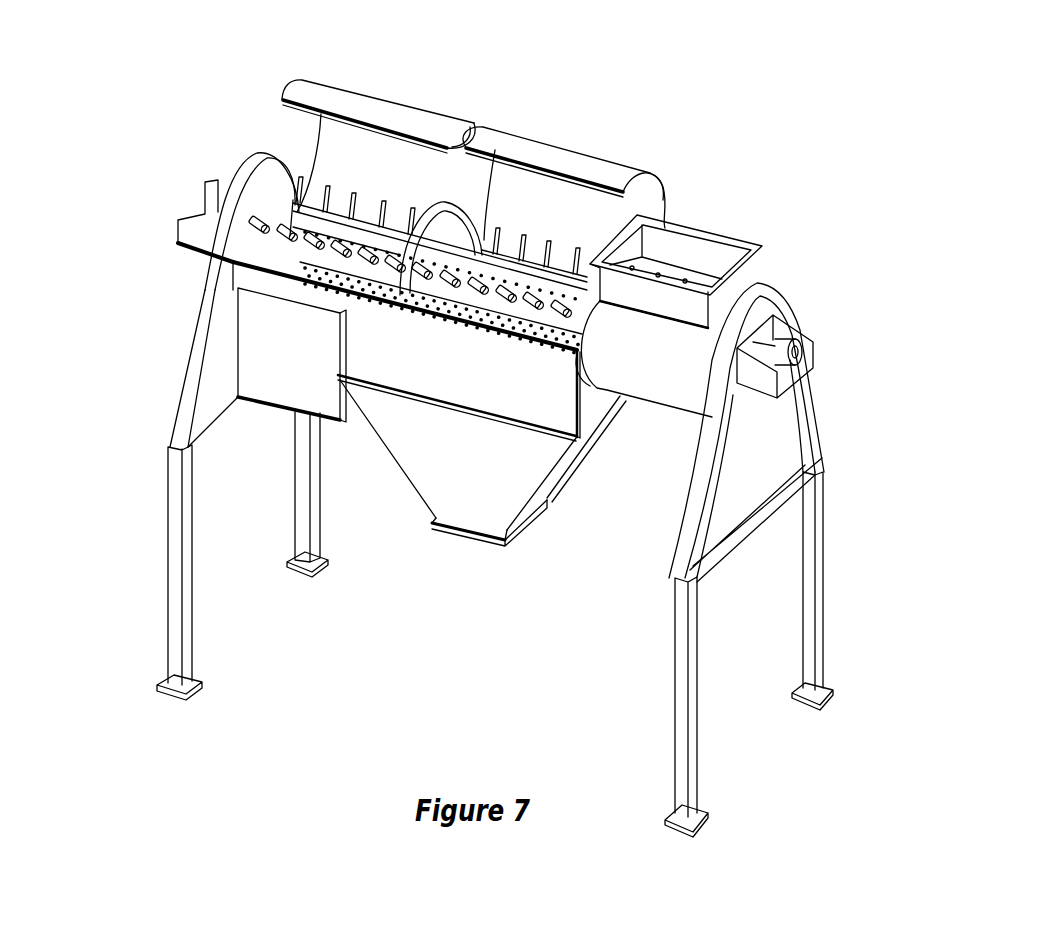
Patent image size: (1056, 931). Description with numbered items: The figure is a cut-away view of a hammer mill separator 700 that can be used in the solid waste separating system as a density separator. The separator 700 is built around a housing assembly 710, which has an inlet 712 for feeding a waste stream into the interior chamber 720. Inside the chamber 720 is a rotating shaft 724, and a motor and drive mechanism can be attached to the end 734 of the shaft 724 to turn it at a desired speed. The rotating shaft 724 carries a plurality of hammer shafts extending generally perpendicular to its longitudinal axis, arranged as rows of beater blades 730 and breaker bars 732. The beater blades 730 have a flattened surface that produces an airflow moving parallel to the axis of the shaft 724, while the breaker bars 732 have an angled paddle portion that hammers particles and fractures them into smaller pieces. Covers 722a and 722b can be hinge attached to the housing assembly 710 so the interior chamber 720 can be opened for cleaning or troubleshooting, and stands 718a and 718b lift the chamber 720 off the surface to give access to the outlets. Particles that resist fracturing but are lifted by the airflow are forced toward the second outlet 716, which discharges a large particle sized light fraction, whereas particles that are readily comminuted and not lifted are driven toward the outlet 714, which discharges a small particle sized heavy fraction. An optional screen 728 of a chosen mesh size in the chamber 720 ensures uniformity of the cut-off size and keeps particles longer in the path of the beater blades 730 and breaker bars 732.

The hammer mill separator 700 is at (938, 70).
The housing assembly 710 is at (802, 160).
The inlet 712 is at (750, 280).
The outlet 714 is at (467, 533).
The second outlet 716 is at (288, 413).
The stand 718a is at (835, 446).
The stand 718b is at (172, 440).
The interior chamber 720 is at (278, 170).
The cover 722a is at (385, 105).
The cover 722b is at (563, 155).
The rotating shaft 724 is at (265, 249).
The screen 728 is at (337, 293).
The beater blades 730 is at (493, 337).
The breaker bars 732 is at (328, 195).
The end 734 is at (815, 344).